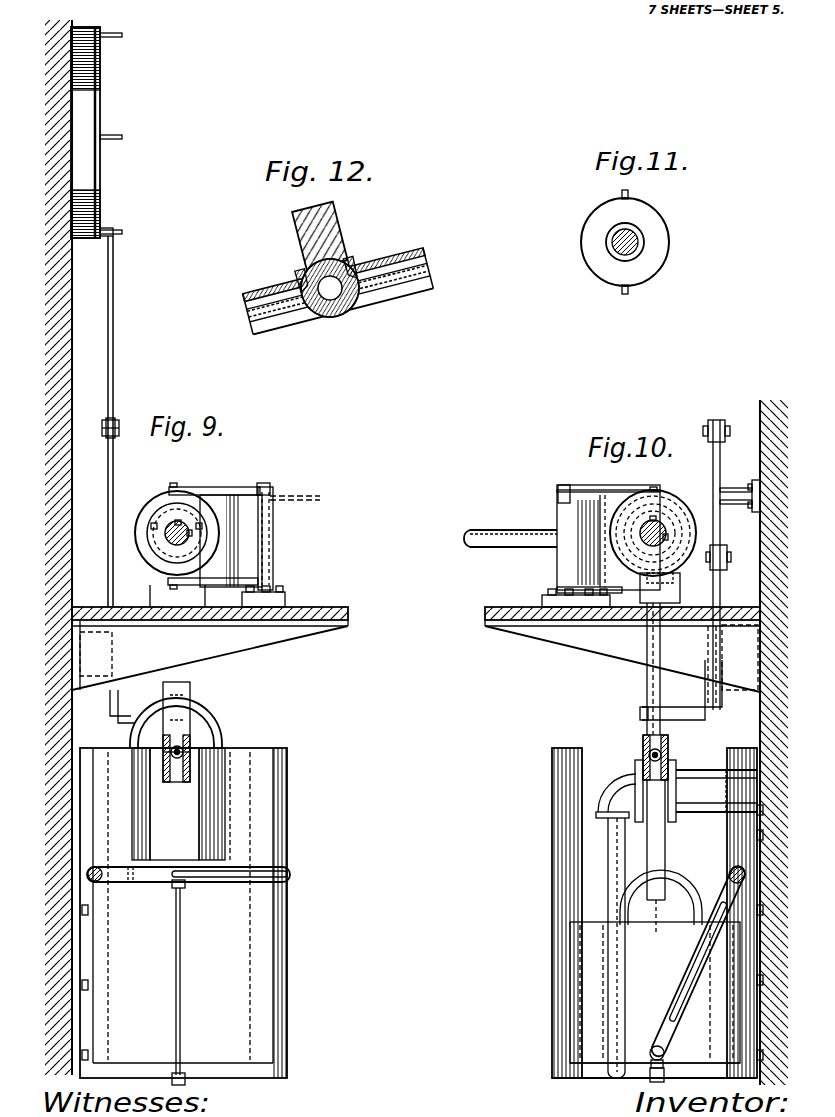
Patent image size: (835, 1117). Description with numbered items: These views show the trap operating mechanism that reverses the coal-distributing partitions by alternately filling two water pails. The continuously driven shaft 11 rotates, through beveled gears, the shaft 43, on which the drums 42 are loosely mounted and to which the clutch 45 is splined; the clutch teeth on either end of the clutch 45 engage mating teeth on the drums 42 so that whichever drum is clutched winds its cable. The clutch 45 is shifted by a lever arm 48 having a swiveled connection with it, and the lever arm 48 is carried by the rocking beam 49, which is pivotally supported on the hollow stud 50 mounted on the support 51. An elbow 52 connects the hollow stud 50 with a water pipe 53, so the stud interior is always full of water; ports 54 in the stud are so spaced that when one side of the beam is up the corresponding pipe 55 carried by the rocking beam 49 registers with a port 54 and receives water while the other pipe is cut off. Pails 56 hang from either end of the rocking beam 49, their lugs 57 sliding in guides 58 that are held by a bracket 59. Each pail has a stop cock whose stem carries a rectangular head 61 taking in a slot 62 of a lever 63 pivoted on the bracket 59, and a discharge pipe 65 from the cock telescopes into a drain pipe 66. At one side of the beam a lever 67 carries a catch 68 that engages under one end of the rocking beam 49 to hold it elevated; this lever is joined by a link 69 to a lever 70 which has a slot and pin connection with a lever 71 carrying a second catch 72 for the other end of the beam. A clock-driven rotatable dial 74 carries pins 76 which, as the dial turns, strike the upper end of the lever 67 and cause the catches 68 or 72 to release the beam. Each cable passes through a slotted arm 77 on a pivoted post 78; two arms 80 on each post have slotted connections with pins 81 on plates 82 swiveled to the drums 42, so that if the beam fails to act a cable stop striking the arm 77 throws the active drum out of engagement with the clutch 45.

In FIG. 10, the shaft 11 is at (498, 534).
In FIG. 9, the drums 42 is at (134, 522).
In FIG. 10, the drums 42 is at (676, 497).
In FIG. 9, the shaft 43 is at (137, 544).
In FIG. 10, the shaft 43 is at (660, 530).
In FIG. 11, the shaft 43 is at (610, 250).
In FIG. 10, the clutch 45 is at (670, 560).
In FIG. 10, the lever arm 48 is at (647, 688).
In FIG. 12, the lever arm 48 is at (330, 227).
In FIG. 9, the rocking beam 49 is at (190, 748).
In FIG. 10, the rocking beam 49 is at (643, 742).
In FIG. 12, the rocking beam 49 is at (255, 292).
In FIG. 12, the hollow stud 50 is at (330, 318).
In FIG. 10, the support 51 is at (696, 791).
In FIG. 10, the elbow 52 is at (616, 805).
In FIG. 10, the water pipe 53 is at (608, 856).
In FIG. 12, the ports 54 is at (307, 273).
In FIG. 9, the pipes 55 is at (185, 757).
In FIG. 10, the pipes 55 is at (662, 752).
In FIG. 12, the pipes 55 is at (253, 308).
In FIG. 9, the pails 56 is at (174, 804).
In FIG. 10, the pails 56 is at (652, 880).
In FIG. 9, the lugs 57 is at (113, 758).
In FIG. 10, the lugs 57 is at (590, 988).
In FIG. 9, the guides 58 is at (277, 950).
In FIG. 10, the guides 58 is at (552, 882).
In FIG. 9, the bracket 59 is at (75, 946).
In FIG. 10, the bracket 59 is at (757, 937).
In FIG. 9, the rectangular head 61 is at (167, 889).
In FIG. 10, the rectangular head 61 is at (653, 1048).
In FIG. 9, the slot 62 is at (242, 881).
In FIG. 10, the slot 62 is at (690, 990).
In FIG. 9, the lever 63 is at (147, 884).
In FIG. 10, the lever 63 is at (730, 880).
In FIG. 9, the discharge pipe 65 is at (182, 978).
In FIG. 9, the drain pipe 66 is at (186, 1081).
In FIG. 9, the lever 67 is at (113, 352).
In FIG. 9, the catch 68 is at (120, 708).
In FIG. 9, the link 69 is at (106, 434).
In FIG. 10, the lever 70 is at (713, 466).
In FIG. 10, the lever 71 is at (722, 612).
In FIG. 10, the catch 72 is at (676, 706).
In FIG. 9, the rotatable dial 74 is at (85, 132).
In FIG. 9, the pins 76 is at (118, 40).
In FIG. 9, the arm 77 is at (272, 491).
In FIG. 10, the arm 77 is at (557, 498).
In FIG. 9, the pivoted post 78 is at (272, 547).
In FIG. 10, the pivoted post 78 is at (557, 562).
In FIG. 9, the arms 80 is at (194, 487).
In FIG. 10, the arms 80 is at (597, 485).
In FIG. 9, the pins 81 is at (173, 483).
In FIG. 10, the pins 81 is at (654, 487).
In FIG. 11, the pins 81 is at (622, 193).
In FIG. 11, the plates 82 is at (658, 255).